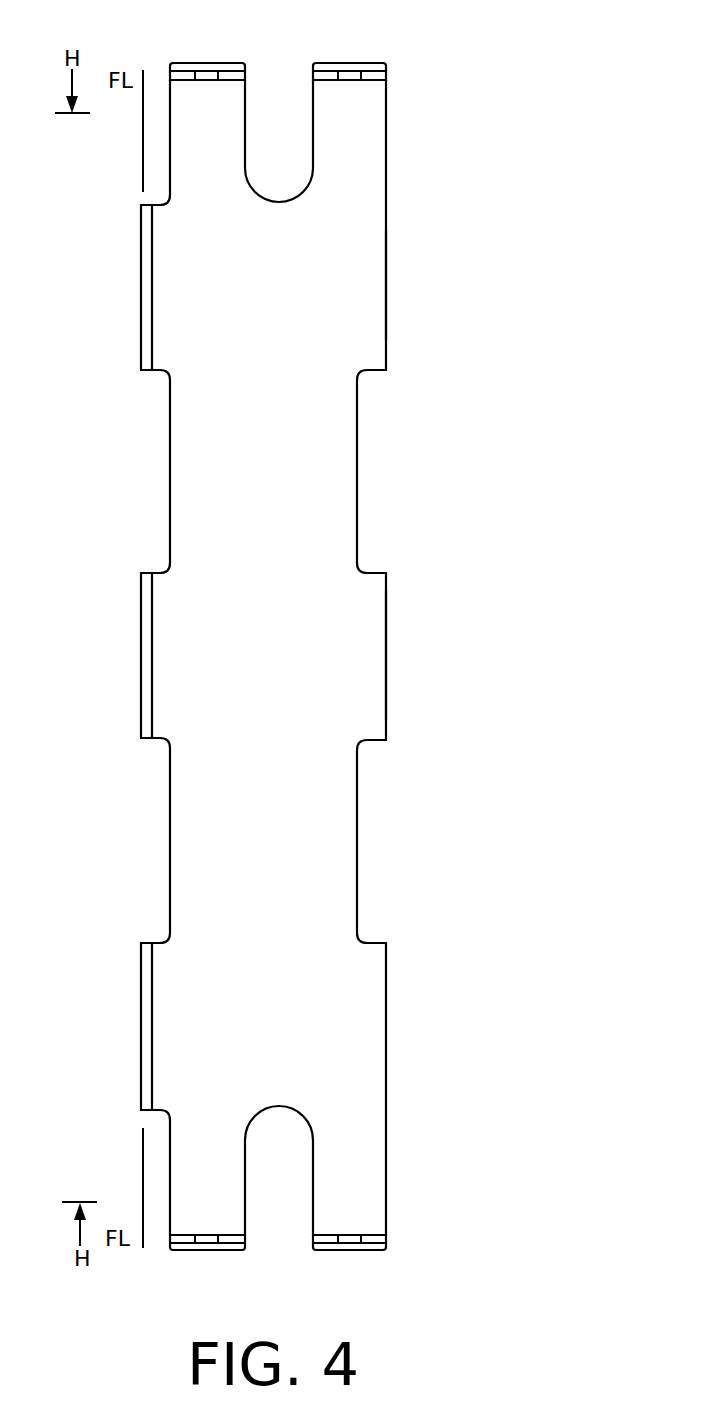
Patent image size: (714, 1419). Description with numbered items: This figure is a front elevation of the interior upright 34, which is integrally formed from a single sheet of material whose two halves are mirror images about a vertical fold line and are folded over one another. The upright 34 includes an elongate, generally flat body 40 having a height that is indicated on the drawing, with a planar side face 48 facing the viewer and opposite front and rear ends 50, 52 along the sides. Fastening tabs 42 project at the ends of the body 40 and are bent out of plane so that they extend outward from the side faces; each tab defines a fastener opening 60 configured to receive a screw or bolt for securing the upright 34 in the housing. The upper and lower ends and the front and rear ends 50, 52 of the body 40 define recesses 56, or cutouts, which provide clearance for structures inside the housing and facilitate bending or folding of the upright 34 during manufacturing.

The interior upright 34 is at (511, 171).
The body 40 is at (370, 230).
The upper fastening tabs 42 is at (222, 63).
The planar side face 48 is at (276, 578).
The front end 50 is at (141, 290).
The rear end 52 is at (386, 305).
The recesses 56 is at (312, 87).
The fastener openings 60 is at (188, 72).